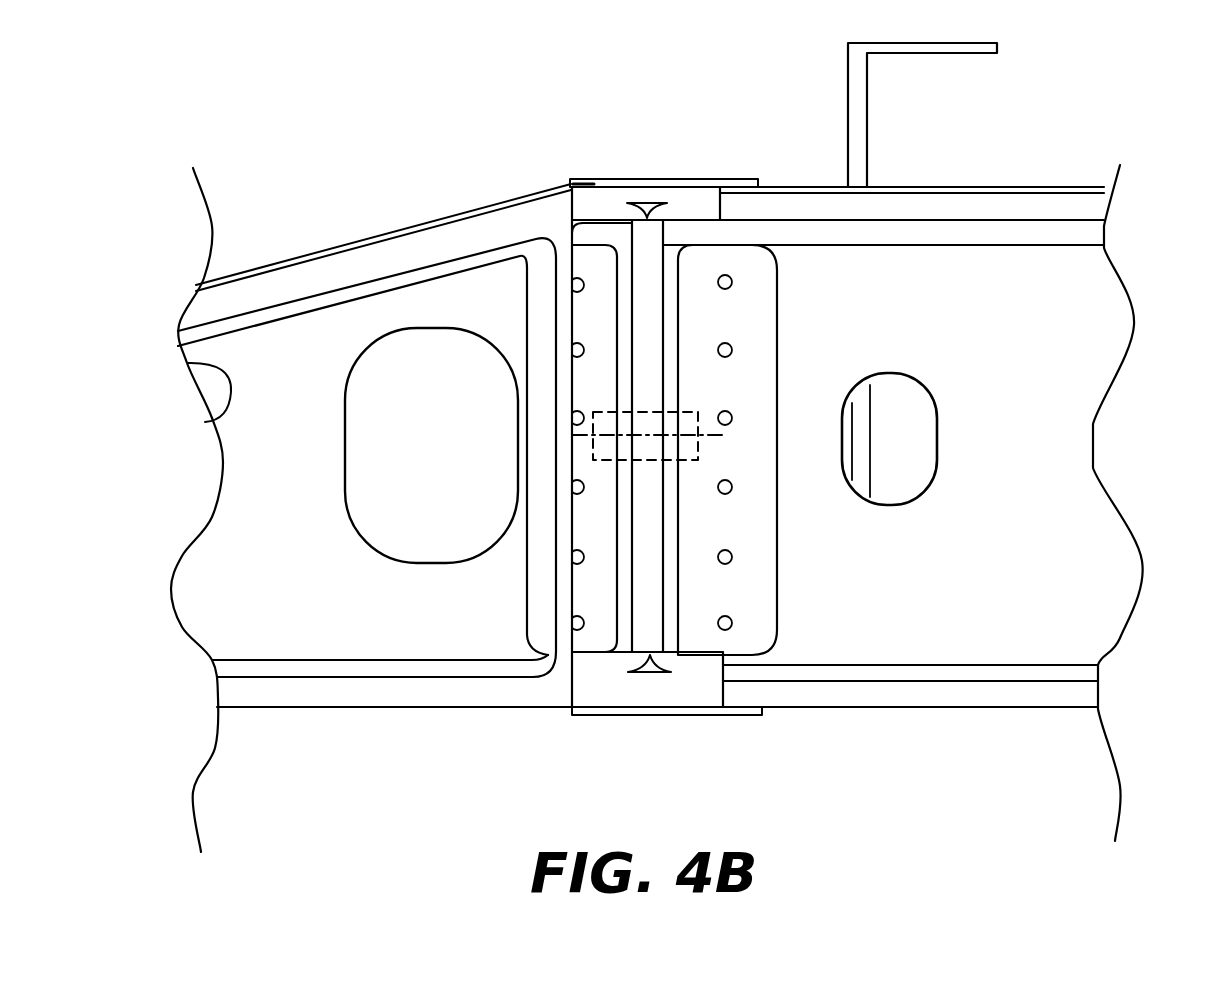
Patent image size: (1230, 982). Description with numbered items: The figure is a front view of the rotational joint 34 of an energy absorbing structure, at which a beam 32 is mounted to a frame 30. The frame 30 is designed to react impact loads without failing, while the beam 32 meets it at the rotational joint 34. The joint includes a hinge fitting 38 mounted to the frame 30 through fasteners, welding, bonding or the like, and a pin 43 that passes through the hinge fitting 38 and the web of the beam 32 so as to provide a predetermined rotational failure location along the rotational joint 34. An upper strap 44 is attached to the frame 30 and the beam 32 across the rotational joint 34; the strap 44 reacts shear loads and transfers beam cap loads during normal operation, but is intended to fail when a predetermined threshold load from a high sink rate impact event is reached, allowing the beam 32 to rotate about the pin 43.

The frame 30 is at (1093, 296).
The beam 32 is at (649, 245).
The rotational joint 34 is at (641, 160).
The hinge fitting 38 is at (581, 486).
The pin 43 is at (653, 410).
The upper strap 44 is at (546, 176).